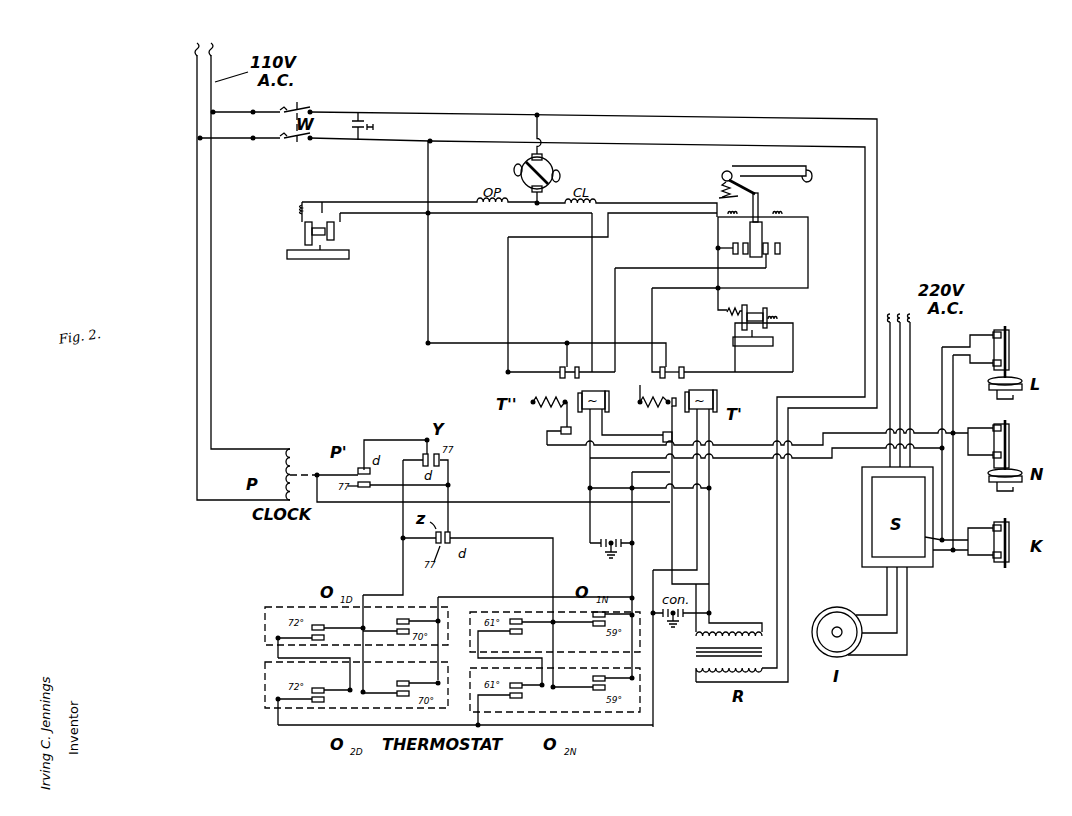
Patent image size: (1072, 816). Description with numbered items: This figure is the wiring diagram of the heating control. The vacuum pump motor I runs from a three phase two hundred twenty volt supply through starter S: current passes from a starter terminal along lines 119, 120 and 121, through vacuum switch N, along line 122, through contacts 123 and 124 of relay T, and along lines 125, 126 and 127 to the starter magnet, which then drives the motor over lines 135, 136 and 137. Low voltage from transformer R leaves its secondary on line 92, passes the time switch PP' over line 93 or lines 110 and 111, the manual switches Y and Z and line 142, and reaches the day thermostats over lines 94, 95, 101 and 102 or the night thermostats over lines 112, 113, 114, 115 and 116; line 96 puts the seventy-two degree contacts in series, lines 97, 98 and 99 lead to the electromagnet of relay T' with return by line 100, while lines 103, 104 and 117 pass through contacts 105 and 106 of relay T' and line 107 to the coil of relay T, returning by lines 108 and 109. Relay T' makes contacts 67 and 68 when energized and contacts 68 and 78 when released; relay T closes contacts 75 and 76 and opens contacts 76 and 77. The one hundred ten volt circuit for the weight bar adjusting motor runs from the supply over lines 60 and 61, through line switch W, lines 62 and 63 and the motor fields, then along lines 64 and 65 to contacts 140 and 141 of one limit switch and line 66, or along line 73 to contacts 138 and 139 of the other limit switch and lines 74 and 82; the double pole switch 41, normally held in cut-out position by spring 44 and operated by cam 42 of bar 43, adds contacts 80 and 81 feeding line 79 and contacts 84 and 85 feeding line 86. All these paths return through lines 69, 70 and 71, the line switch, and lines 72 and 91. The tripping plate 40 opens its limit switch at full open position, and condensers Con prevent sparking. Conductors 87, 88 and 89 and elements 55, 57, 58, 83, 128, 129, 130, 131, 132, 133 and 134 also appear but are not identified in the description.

The line 91 is at (196, 55).
The line 60 is at (213, 56).
The line 92 is at (700, 586).
The conductor 89 is at (212, 268).
The line 61 is at (233, 111).
The line 72 is at (232, 139).
The line 62 is at (378, 113).
The line 71 is at (390, 140).
The conductor 87 is at (788, 500).
The conductor 88 is at (777, 512).
The line 63 is at (540, 121).
The motor 57 is at (519, 180).
The line 73 is at (387, 201).
The line 64 is at (650, 200).
The contact 139 is at (340, 213).
The contact 138 is at (306, 205).
The solenoid 58 is at (299, 226).
The cam or block 40 is at (332, 260).
The line 70 is at (478, 344).
The line 86 is at (508, 268).
The line 74 is at (592, 290).
The line 82 is at (654, 264).
The line 65 is at (708, 288).
The line 79 is at (662, 288).
The coils 83 is at (728, 216).
The contact 84 is at (717, 248).
The contact 85 is at (751, 242).
The double pole switch 41 is at (762, 234).
The contact 81 is at (780, 248).
The contact 80 is at (775, 257).
The cam 42 is at (736, 170).
The bar 43 is at (808, 176).
The spring 44 is at (721, 180).
The contact 140 is at (746, 310).
The relay 55 is at (740, 325).
The contact 141 is at (775, 315).
The line 96 is at (755, 347).
The line 66 is at (793, 341).
The contact 75 is at (569, 343).
The contact 76 is at (560, 366).
The contact 77 is at (562, 377).
The line 69 is at (633, 342).
The contact 78 is at (665, 379).
The contact 68 is at (683, 367).
The contact 67 is at (687, 372).
The contact 124 is at (562, 406).
The contact 123 is at (560, 430).
The line 107 is at (612, 436).
The line 108 is at (588, 472).
The contact 106 is at (664, 436).
The contact 105 is at (661, 408).
The line 99 is at (696, 544).
The line 100 is at (709, 541).
The line 117 is at (654, 659).
The line 104 is at (632, 556).
The line 109 is at (600, 489).
The line 125 is at (760, 447).
The line 122 is at (923, 435).
The conductor 132 is at (888, 320).
The conductor 133 is at (898, 329).
The conductor 134 is at (912, 327).
The conductor 128 is at (942, 350).
The conductor 129 is at (953, 383).
The line 126 is at (941, 451).
The line 120 is at (953, 492).
The line 121 is at (965, 431).
The conductor 131 is at (968, 530).
The line 127 is at (925, 538).
The line 119 is at (935, 555).
The contact 130 is at (974, 560).
The line 135 is at (887, 581).
The line 136 is at (897, 592).
The line 137 is at (909, 596).
The line 93 is at (412, 440).
The line 110 is at (372, 484).
The line 111 is at (448, 487).
The line 142 is at (448, 472).
The line 94 is at (402, 530).
The line 112 is at (508, 532).
The line 95 is at (360, 651).
The line 101 is at (363, 650).
The line 102 is at (439, 650).
The line 103 is at (515, 598).
The line 97 is at (306, 728).
The line 98 is at (629, 728).
The line 113 is at (555, 624).
The line 114 is at (517, 634).
The line 115 is at (516, 699).
The line 116 is at (553, 663).